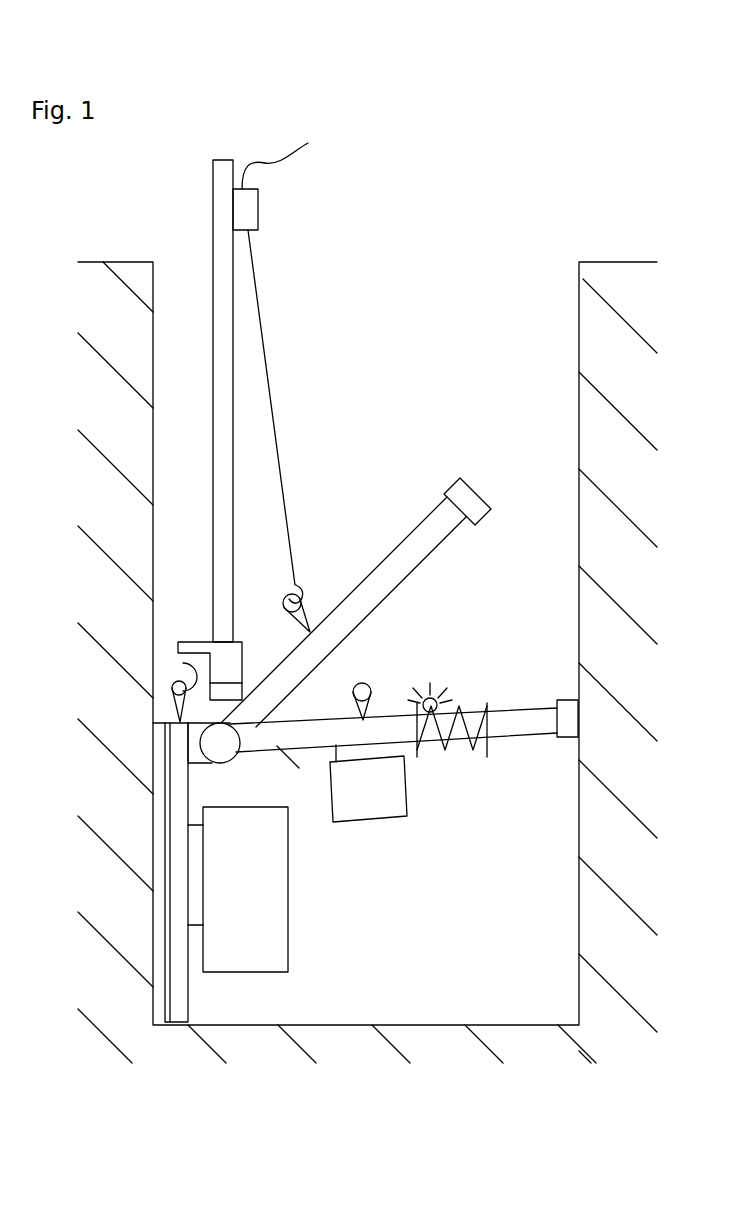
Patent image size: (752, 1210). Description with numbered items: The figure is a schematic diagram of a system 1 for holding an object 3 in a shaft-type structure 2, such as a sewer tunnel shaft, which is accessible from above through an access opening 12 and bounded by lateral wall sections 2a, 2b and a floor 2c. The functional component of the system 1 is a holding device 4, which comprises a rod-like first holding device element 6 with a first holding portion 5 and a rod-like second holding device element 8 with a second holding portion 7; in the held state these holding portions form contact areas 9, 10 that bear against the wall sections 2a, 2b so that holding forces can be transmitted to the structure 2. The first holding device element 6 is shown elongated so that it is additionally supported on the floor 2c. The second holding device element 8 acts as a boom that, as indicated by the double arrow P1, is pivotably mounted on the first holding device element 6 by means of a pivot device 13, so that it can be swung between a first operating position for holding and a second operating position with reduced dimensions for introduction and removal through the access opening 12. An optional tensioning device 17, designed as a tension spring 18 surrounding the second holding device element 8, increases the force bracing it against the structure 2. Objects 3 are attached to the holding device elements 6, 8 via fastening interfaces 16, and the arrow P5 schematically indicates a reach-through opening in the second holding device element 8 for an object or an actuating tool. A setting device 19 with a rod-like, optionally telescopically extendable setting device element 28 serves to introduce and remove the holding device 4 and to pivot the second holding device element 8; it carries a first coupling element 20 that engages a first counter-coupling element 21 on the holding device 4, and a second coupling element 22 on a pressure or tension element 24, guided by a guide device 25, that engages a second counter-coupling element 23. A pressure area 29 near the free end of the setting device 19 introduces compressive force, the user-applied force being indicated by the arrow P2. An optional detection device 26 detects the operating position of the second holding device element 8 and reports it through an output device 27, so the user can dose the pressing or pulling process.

The system 1 is at (435, 406).
The shaft-type structure 2 is at (367, 642).
The wall section 2a is at (152, 900).
The wall section 2b is at (582, 925).
The floor 2c is at (423, 1027).
The object 3 is at (311, 858).
The holding device 4 is at (313, 853).
The first holding portion 5 is at (176, 872).
The first holding device element 6 is at (189, 985).
The second holding portion 7 is at (490, 510).
The second holding device element 8 is at (389, 560).
The contact area 9 is at (150, 788).
The contact area 10 is at (586, 716).
The access opening 12 is at (480, 240).
The pivot device 13 is at (217, 762).
The fastening interface 16 is at (207, 878).
The tensioning device 17 is at (480, 752).
The tension spring 18 is at (482, 760).
The setting device 19 is at (278, 322).
The first coupling element 20 is at (180, 670).
The first counter-coupling element 21 is at (168, 704).
The second coupling element 22 is at (303, 588).
The second counter-coupling element 23 is at (309, 615).
The pressure or tension element 24 is at (278, 437).
The guide device 25 is at (258, 212).
The detection device 26 is at (441, 739).
The output device 27 is at (437, 745).
The setting device element 28 is at (213, 437).
The pressure area 29 is at (226, 703).
The double arrow P1 is at (460, 698).
The arrow P2 is at (520, 700).
The arrow P5 is at (273, 717).